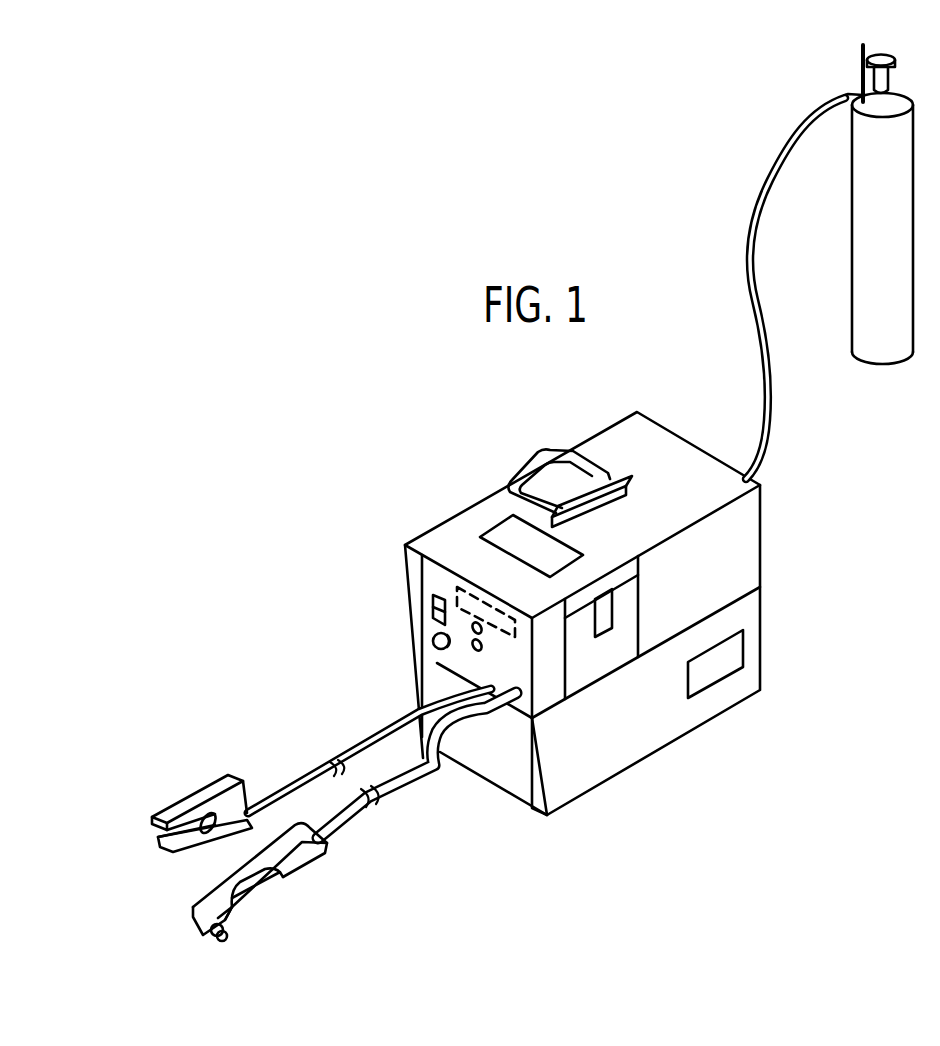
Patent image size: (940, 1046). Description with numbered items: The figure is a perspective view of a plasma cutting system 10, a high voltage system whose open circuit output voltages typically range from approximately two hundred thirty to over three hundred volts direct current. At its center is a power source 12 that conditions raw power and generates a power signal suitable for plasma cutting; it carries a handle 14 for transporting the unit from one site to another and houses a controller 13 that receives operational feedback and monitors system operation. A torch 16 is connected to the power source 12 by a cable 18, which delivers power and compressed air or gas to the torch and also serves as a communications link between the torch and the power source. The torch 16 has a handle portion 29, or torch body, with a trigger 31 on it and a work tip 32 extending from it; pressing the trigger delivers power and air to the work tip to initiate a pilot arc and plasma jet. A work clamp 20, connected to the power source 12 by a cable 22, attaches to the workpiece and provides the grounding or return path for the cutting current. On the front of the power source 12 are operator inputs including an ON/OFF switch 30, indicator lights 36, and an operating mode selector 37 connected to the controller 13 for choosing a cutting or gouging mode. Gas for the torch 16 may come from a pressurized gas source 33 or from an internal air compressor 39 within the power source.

The plasma cutting system 10 is at (362, 453).
The power source 12 is at (673, 440).
The controller 13 is at (475, 595).
The handle 14 is at (553, 452).
The torch 16 is at (248, 894).
The cable 18 is at (433, 774).
The work clamp 20 is at (188, 796).
The cable 22 is at (290, 787).
The handle portion 29 is at (298, 844).
The ON/OFF switch 30 is at (432, 609).
The trigger 31 is at (265, 893).
The work tip 32 is at (226, 938).
The pressurized gas source 33 is at (897, 225).
The indicator lights 36 is at (466, 656).
The operating mode selector 37 is at (428, 640).
The internal air compressor 39 is at (733, 656).